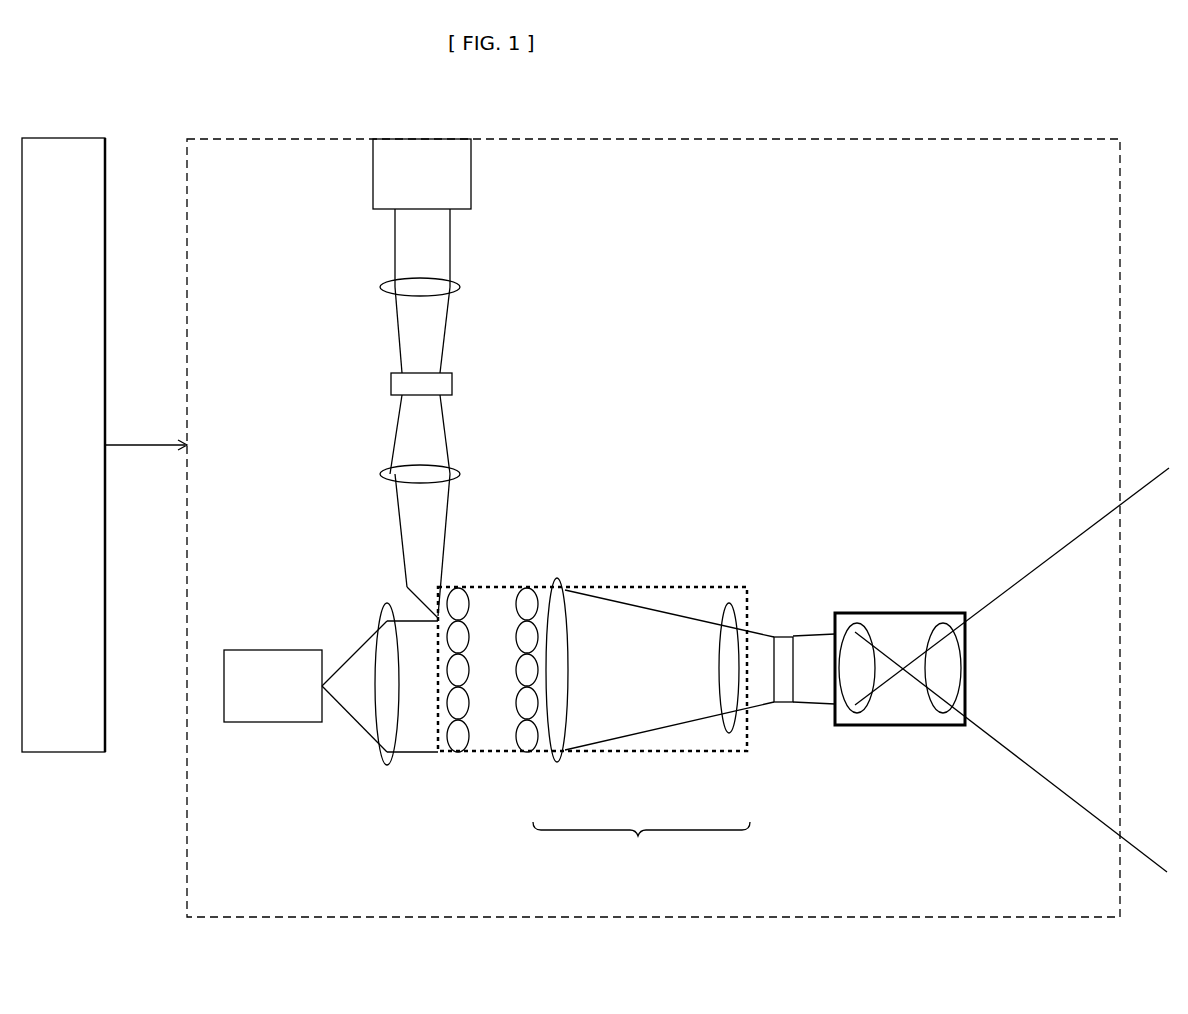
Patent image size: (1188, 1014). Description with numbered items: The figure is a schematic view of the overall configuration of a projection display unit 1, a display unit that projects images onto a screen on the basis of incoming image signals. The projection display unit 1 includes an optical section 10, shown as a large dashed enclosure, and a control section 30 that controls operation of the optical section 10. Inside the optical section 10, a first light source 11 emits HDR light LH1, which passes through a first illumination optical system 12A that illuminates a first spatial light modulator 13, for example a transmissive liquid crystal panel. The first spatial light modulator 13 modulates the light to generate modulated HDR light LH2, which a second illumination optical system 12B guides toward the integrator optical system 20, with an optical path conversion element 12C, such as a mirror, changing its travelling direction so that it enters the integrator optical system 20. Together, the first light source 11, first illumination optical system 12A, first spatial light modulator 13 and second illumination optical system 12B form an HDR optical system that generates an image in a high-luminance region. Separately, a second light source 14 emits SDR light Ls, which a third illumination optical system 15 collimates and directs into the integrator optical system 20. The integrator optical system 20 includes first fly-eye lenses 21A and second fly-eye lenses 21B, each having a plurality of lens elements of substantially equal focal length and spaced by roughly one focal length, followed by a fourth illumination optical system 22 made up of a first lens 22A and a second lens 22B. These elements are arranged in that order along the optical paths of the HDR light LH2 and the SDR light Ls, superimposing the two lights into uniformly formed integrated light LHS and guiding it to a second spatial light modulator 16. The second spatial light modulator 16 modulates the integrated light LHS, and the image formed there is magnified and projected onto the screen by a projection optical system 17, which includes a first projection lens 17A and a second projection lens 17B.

The projection display unit 1 is at (860, 108).
The optical section 10 is at (655, 139).
The first light source 11 is at (465, 176).
The HDR light LH1 is at (398, 247).
The first illumination optical system 12A is at (462, 289).
The first spatial light modulator 13 is at (446, 384).
The modulated HDR light LH2 is at (397, 437).
The second illumination optical system 12B is at (462, 474).
The optical path conversion element 12C is at (405, 586).
The second light source 14 is at (274, 712).
The SDR light Ls is at (343, 690).
The third illumination optical system 15 is at (387, 766).
The integrator optical system 20 is at (750, 735).
The first fly-eye lenses 21A is at (457, 602).
The second fly-eye lenses 21B is at (525, 600).
The first lens 22A is at (556, 765).
The second lens 22B is at (729, 740).
The fourth illumination optical system 22 is at (641, 843).
The integrated light LHS is at (614, 735).
The second spatial light modulator 16 is at (785, 642).
The projection optical system 17 is at (913, 716).
The first projection lens 17A is at (858, 630).
The second projection lens 17B is at (940, 630).
The control section 30 is at (62, 136).